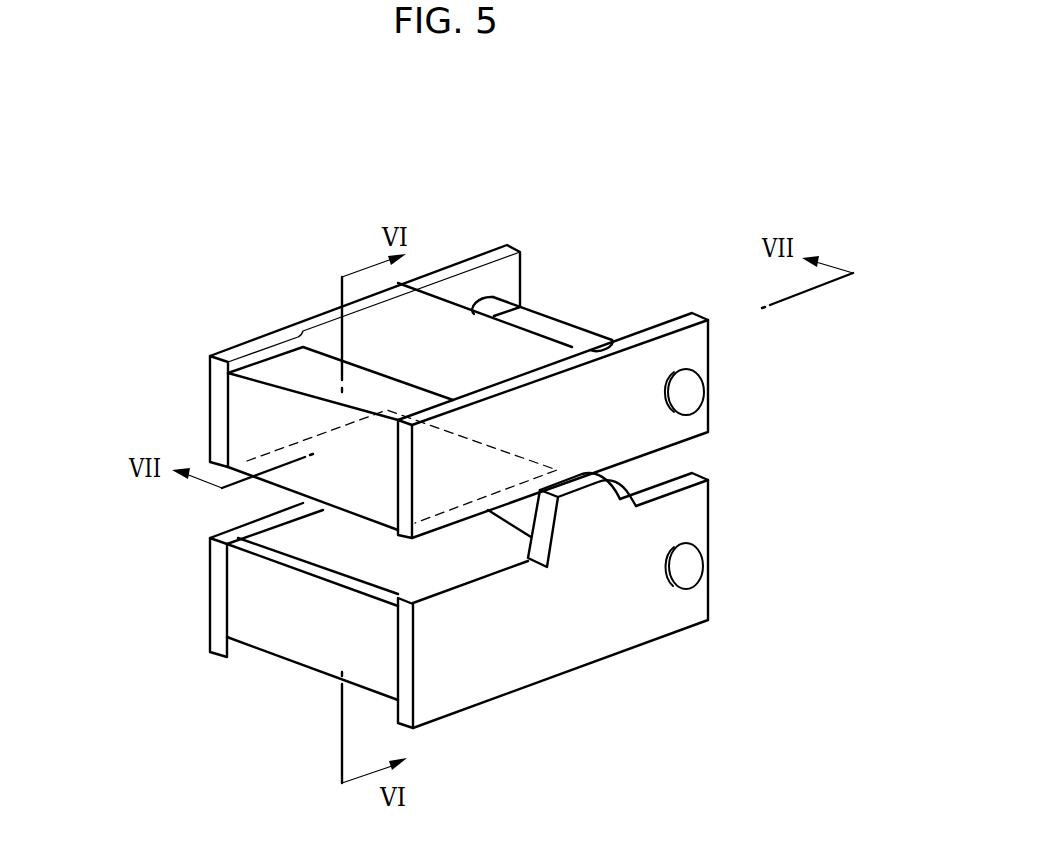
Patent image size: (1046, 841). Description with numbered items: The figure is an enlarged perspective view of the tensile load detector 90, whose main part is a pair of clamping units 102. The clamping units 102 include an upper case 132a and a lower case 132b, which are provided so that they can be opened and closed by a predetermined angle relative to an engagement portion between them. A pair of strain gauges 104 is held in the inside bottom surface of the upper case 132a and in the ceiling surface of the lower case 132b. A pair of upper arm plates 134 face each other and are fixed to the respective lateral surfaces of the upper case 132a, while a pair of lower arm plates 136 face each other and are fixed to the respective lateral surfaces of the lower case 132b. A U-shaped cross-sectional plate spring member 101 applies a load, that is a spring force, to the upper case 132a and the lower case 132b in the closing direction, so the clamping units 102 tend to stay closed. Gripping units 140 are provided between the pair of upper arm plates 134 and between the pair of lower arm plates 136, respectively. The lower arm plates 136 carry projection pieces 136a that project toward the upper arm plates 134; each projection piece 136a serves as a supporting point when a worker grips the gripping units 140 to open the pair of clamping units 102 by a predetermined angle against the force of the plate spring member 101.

The tensile load detector 90 is at (291, 241).
The plate spring member 101 is at (480, 353).
The clamping units 102 is at (203, 362).
The strain gauges 104 is at (300, 447).
The upper case 132a is at (256, 419).
The lower case 132b is at (308, 632).
The upper arm plates 134 is at (467, 262).
The lower arm plates 136 is at (217, 607).
The projection pieces 136a is at (575, 489).
The gripping units 140 is at (692, 392).